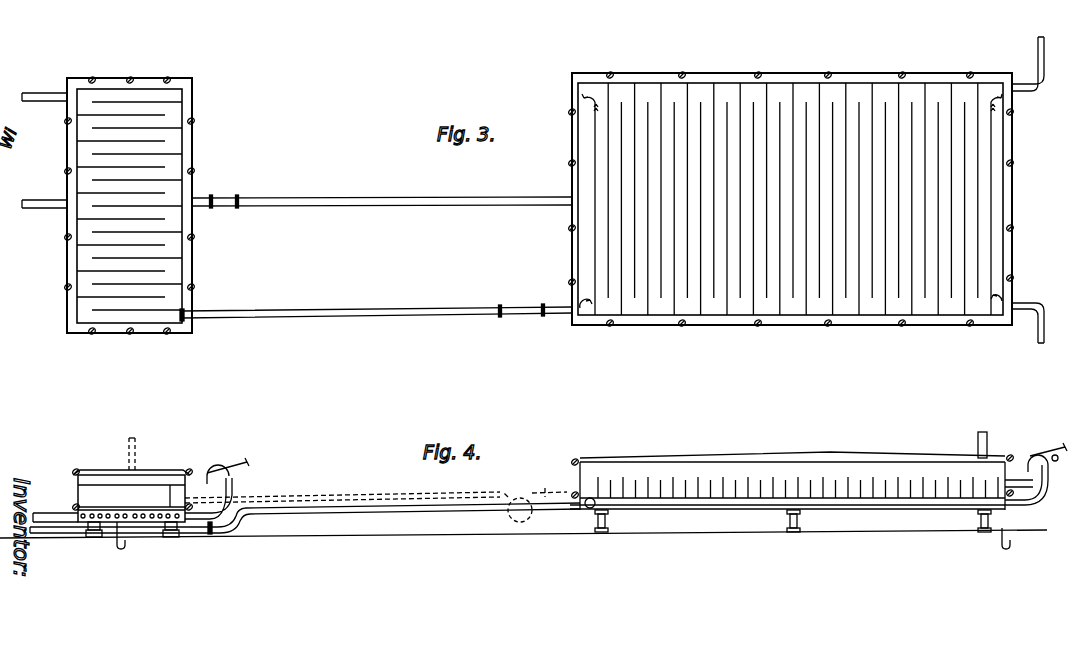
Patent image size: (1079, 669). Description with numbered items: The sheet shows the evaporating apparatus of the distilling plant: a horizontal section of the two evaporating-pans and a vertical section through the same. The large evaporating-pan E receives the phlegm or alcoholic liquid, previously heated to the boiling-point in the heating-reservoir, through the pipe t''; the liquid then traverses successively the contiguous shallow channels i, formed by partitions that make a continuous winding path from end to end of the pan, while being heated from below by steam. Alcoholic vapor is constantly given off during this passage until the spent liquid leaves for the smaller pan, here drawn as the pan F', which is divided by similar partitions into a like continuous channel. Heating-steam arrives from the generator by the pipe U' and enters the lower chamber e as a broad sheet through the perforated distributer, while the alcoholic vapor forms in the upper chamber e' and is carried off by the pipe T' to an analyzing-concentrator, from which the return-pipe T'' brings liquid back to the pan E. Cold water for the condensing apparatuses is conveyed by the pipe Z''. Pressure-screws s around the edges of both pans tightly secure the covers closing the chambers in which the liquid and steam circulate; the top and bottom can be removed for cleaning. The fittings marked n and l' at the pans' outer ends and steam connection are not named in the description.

In FIG. 3, the furnace / feed vessel F' is at (107, 205).
In FIG. 4, the furnace / feed vessel F' is at (111, 503).
In FIG. 3, the steam pipe U' is at (382, 193).
In FIG. 4, the steam pipe U' is at (305, 511).
In FIG. 3, the water pipe Z'' is at (376, 304).
In FIG. 3, the evaporating-pan E is at (792, 199).
In FIG. 4, the evaporating-pan E is at (792, 492).
In FIG. 3, the channels / partitions i is at (796, 199).
In FIG. 4, the channels / partitions i is at (798, 487).
In FIG. 3, the pressure-screws s is at (540, 202).
In FIG. 4, the pressure-screws s is at (537, 476).
In FIG. 3, the phlegm inlet pipe t'' is at (1035, 55).
In FIG. 3, the return-pipe T'' is at (1040, 323).
In FIG. 4, the nozzle n is at (626, 473).
In FIG. 4, the upper chamber e' is at (414, 490).
In FIG. 4, the steam chamber e is at (551, 503).
In FIG. 4, the valve l' is at (596, 500).
In FIG. 4, the alcoholic-vapor pipe T' is at (981, 434).